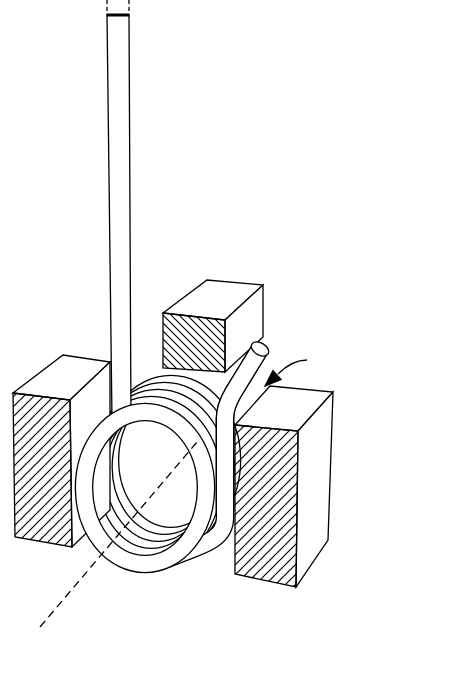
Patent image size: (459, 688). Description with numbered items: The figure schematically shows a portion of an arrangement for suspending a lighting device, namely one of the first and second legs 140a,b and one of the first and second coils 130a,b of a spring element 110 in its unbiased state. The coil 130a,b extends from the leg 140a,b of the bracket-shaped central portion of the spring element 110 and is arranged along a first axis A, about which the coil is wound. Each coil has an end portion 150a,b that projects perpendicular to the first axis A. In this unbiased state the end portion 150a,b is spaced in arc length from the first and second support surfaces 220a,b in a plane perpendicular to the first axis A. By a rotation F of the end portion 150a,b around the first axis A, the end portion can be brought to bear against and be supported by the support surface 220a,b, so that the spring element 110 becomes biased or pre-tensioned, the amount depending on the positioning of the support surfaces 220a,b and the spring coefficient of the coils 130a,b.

The spring element 110 is at (225, 339).
The first and second coils 130a,b is at (225, 326).
The first and second legs 140a,b is at (122, 161).
The first and second end portions 150a,b is at (217, 350).
The first and second support surfaces 220a,b is at (258, 305).
The rotation F is at (296, 358).
The first axis A is at (106, 547).